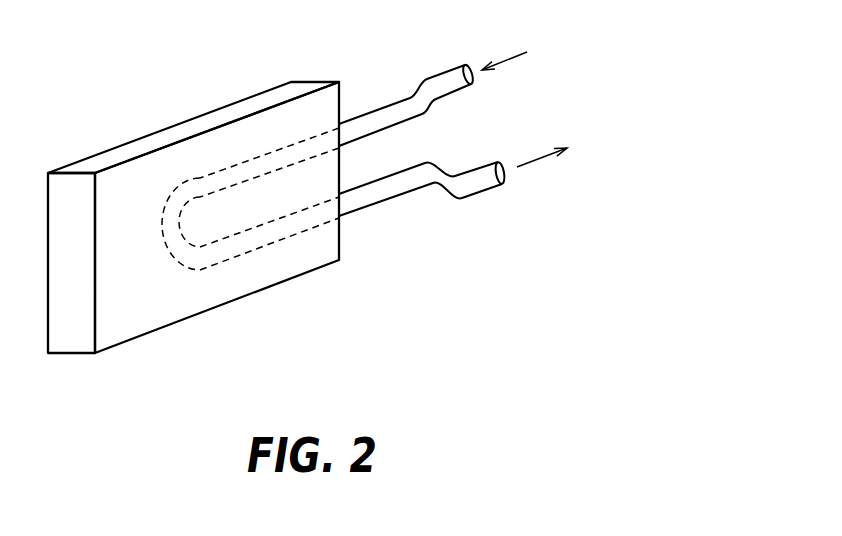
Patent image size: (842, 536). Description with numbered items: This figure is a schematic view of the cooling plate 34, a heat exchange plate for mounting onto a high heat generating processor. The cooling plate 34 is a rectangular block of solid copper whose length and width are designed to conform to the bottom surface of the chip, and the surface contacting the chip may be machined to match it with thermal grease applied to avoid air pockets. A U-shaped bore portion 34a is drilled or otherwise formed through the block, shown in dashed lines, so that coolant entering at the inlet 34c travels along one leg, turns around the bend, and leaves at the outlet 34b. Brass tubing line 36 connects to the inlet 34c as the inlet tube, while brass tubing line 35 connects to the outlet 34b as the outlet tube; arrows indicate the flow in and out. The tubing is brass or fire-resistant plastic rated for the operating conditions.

The cooling plate 34 is at (123, 149).
The U-shaped bore portion 34a is at (262, 245).
The outlet 34b is at (340, 203).
The inlet 34c is at (342, 138).
The brass tubing line 35 is at (483, 183).
The brass tubing line 36 is at (453, 74).